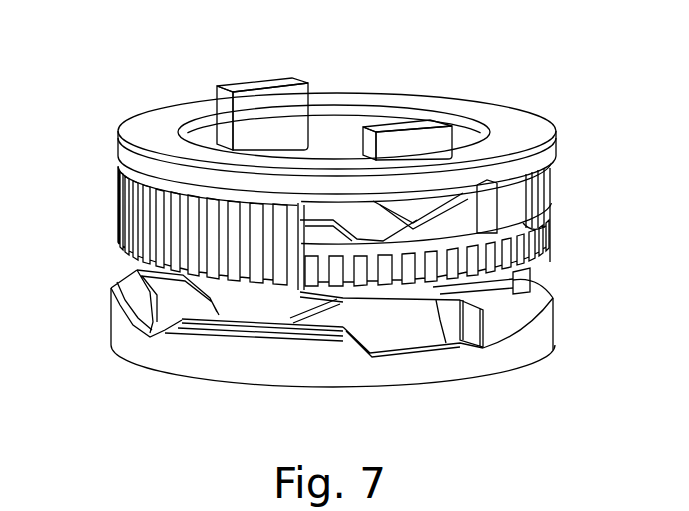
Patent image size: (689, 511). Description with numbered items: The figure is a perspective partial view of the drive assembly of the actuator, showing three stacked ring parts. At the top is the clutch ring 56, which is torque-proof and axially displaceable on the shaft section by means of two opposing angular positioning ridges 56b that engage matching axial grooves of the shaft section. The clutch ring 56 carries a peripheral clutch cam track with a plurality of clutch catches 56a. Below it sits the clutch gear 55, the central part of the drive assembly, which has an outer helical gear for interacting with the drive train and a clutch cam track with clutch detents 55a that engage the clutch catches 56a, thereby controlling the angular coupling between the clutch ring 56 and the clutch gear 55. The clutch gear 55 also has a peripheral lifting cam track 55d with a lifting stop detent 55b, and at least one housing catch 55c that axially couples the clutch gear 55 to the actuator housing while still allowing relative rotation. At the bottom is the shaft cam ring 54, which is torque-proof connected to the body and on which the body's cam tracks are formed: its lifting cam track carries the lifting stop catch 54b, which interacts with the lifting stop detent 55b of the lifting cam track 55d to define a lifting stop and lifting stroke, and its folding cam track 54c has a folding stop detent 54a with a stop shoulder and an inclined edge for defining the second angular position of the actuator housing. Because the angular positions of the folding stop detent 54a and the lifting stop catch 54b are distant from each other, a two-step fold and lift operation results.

The shaft cam ring 54 is at (562, 329).
The folding stop detent 54a is at (475, 320).
The lifting stop catch 54b is at (337, 330).
The folding cam track 54c is at (125, 280).
The clutch gear 55 is at (110, 211).
The clutch detent 55a is at (303, 280).
The lifting stop detent 55b is at (223, 300).
The housing catch 55c is at (543, 287).
The lifting cam track 55d is at (150, 277).
The clutch ring 56 is at (556, 127).
The clutch catch 56a is at (432, 213).
The angular positioning ridge 56b is at (267, 83).